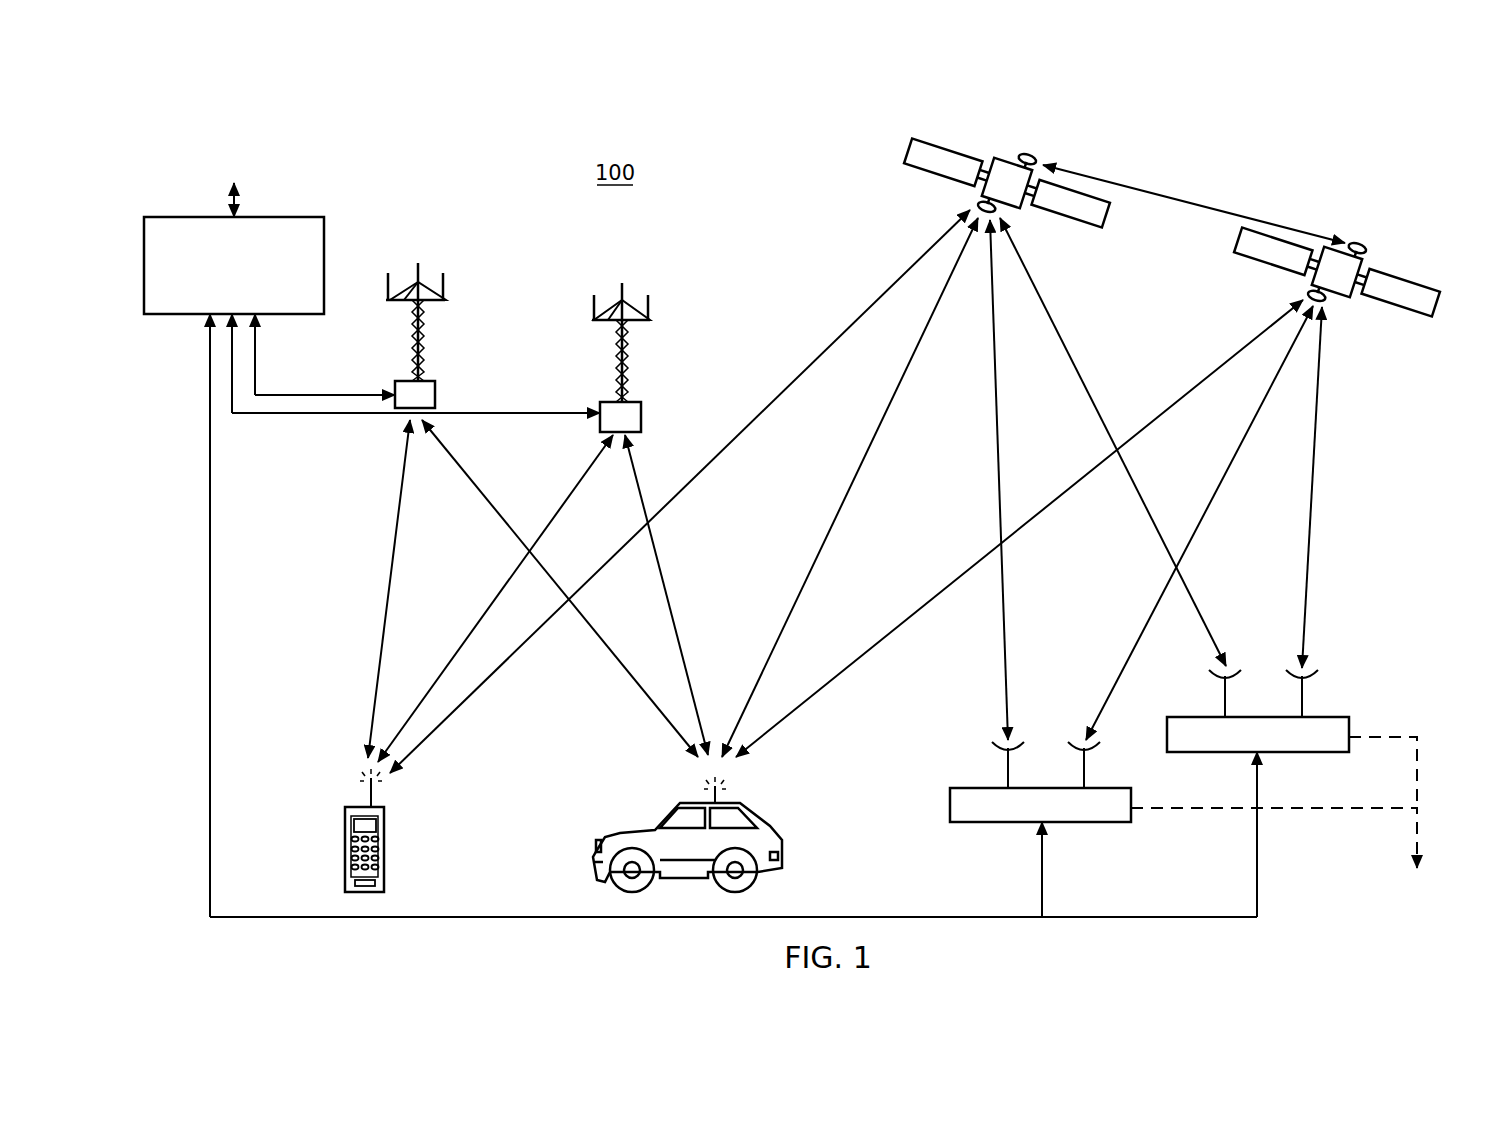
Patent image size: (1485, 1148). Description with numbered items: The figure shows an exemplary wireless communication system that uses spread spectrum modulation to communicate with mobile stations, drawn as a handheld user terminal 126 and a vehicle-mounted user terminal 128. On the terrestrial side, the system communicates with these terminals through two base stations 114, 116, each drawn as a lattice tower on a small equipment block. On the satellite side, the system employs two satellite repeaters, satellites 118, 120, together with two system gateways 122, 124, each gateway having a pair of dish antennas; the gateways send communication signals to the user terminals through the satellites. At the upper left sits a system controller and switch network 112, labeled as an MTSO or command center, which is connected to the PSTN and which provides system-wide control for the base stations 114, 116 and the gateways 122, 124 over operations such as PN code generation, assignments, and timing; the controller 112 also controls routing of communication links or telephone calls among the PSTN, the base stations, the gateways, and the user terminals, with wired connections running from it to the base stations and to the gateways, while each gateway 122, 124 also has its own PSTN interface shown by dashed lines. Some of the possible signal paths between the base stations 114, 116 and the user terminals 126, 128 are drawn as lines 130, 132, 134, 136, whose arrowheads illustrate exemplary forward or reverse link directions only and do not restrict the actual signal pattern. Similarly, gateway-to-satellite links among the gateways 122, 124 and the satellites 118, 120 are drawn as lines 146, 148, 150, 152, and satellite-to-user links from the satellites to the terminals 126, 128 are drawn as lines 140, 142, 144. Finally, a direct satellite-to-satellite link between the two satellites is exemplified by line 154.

The system controller and switch network 112 is at (300, 217).
The base station 114 is at (446, 369).
The base station 116 is at (636, 402).
The satellite 118 is at (1002, 166).
The satellite 120 is at (1362, 266).
The gateway 122 is at (1108, 822).
The gateway 124 is at (1318, 752).
The user terminal 126 is at (344, 807).
The user terminal 128 is at (740, 803).
The line 130 is at (394, 532).
The line 132 is at (603, 640).
The line 134 is at (566, 495).
The line 136 is at (660, 555).
The line 140 is at (830, 343).
The line 142 is at (866, 446).
The line 144 is at (1172, 400).
The line 146 is at (1003, 624).
The line 148 is at (1053, 346).
The line 150 is at (1211, 512).
The line 152 is at (1311, 428).
The line 154 is at (1183, 181).